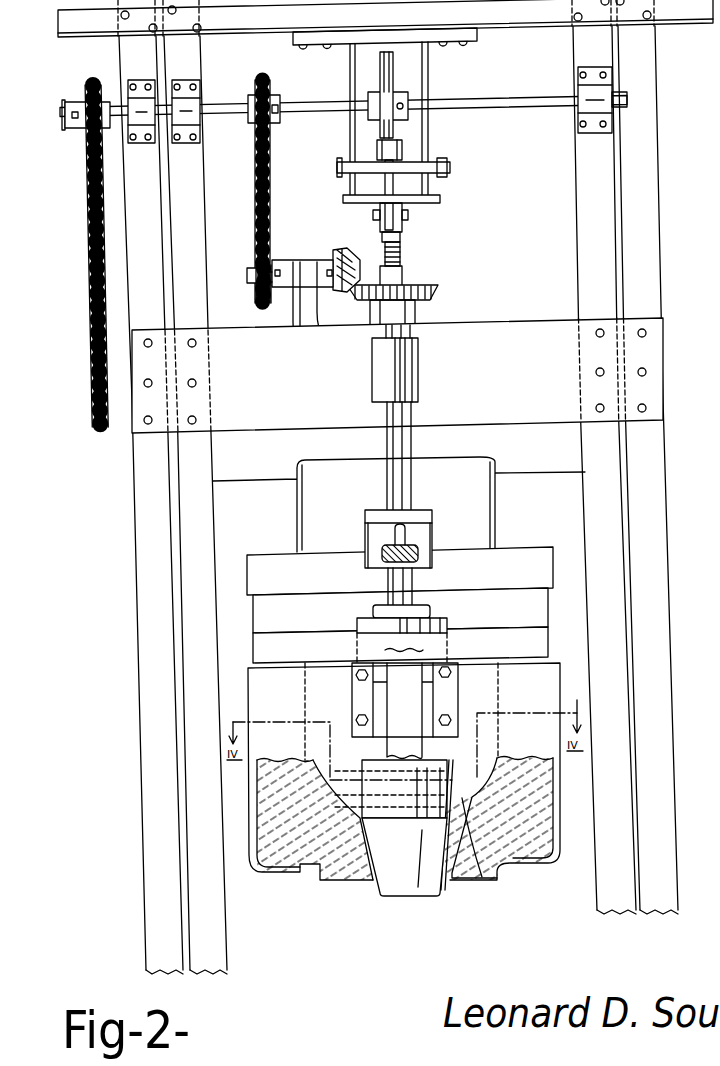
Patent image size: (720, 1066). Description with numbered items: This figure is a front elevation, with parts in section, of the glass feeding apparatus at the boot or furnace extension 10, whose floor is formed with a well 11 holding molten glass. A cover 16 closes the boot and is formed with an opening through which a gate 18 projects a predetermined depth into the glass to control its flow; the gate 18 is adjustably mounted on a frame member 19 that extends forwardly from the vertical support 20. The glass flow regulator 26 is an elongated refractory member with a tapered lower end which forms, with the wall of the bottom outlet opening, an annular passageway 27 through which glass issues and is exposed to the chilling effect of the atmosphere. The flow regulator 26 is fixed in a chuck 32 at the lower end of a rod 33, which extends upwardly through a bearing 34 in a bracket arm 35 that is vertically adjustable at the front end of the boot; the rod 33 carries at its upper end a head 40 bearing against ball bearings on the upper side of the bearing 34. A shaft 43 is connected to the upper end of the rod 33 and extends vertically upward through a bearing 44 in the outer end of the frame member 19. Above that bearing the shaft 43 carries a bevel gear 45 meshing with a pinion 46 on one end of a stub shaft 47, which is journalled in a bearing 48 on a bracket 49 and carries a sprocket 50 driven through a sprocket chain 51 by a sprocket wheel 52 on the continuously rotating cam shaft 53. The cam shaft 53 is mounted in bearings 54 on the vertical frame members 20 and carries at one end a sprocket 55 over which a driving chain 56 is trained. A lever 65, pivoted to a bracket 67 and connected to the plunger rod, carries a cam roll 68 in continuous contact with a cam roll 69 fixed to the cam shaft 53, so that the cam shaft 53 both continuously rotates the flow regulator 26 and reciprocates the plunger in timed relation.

The boot or furnace extension 10 is at (535, 850).
The well or recess 11 is at (482, 877).
The cover 16 is at (532, 548).
The gate 18 is at (492, 468).
The frame member 19 is at (512, 327).
The vertical support 20 is at (581, 187).
The glass flow regulator 26 is at (387, 877).
The annular passageway 27 is at (453, 693).
The chuck 32 is at (448, 626).
The rod 33 is at (386, 596).
The bearing 34 is at (433, 540).
The bracket arm 35 is at (382, 551).
The head 40 is at (432, 511).
The shaft 43 is at (411, 452).
The bearing 44 is at (410, 368).
The bevel gear 45 is at (430, 290).
The pinion 46 is at (348, 248).
The stub shaft 47 is at (247, 275).
The bearing 48 is at (306, 260).
The bracket 49 is at (318, 352).
The sprocket 50 is at (258, 288).
The sprocket chain 51 is at (270, 180).
The sprocket wheel 52 is at (273, 95).
The cam shaft 53 is at (320, 110).
The bearings 54 is at (143, 118).
The sprocket 55 is at (75, 128).
The driving chain 56 is at (77, 256).
The lever 65 is at (395, 188).
The bracket 67 is at (430, 198).
The cam roll 68 is at (390, 148).
The cam roll 69 is at (390, 73).